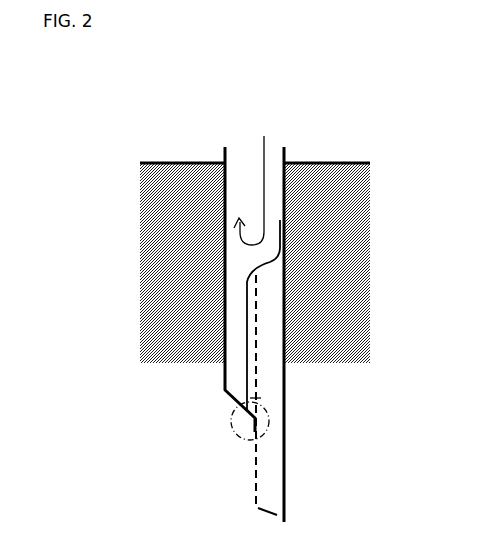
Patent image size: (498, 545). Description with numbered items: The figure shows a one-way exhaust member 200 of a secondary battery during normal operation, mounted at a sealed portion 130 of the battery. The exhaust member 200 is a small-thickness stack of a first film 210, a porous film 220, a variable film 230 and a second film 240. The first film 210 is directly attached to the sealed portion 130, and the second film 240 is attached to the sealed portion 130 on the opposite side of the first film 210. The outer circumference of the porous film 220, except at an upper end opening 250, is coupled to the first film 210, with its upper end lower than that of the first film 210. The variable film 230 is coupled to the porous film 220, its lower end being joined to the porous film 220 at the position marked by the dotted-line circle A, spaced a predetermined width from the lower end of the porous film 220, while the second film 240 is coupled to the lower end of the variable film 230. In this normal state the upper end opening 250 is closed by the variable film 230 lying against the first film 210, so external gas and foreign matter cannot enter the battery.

The sealed portion 130 is at (165, 233).
The one-way exhaust member 200 is at (300, 128).
The first film 210 is at (285, 478).
The porous film 220 is at (256, 462).
The variable film 230 is at (248, 383).
The second film 240 is at (223, 335).
The upper end opening 250 is at (253, 150).
The dotted-line circle A is at (270, 419).